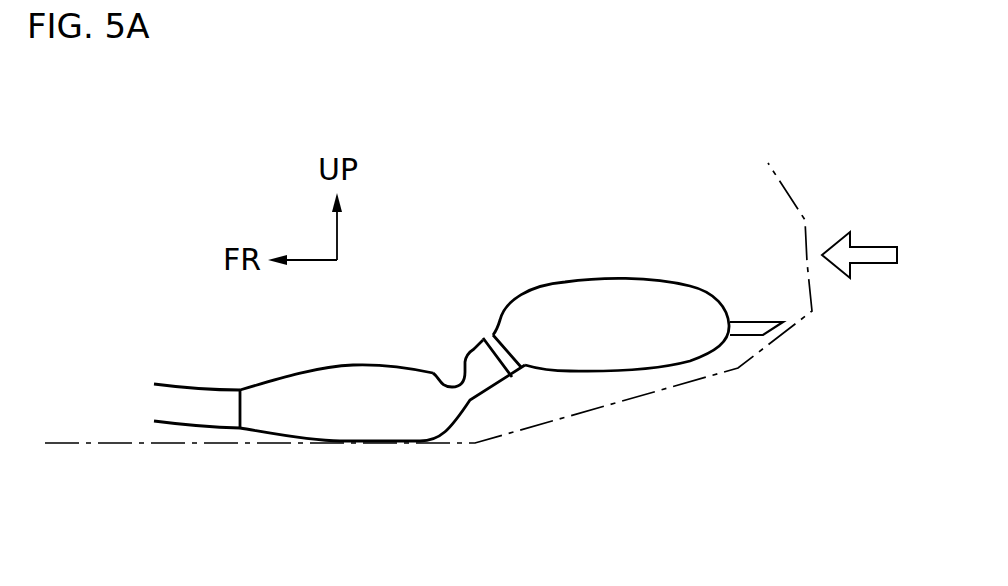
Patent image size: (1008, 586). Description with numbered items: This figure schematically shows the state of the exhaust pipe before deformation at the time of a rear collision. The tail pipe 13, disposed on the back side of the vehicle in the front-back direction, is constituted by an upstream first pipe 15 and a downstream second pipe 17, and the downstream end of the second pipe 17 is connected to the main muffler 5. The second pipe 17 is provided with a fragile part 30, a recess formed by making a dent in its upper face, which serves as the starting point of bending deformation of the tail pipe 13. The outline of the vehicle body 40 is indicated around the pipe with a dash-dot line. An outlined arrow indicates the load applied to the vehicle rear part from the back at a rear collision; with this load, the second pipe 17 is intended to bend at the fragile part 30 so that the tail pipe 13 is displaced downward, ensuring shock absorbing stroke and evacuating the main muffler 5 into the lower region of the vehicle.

The main muffler 5 is at (605, 303).
The tail pipe 13 is at (339, 458).
The first pipe 15 is at (215, 422).
The second pipe 17 is at (382, 431).
The fragile part 30 is at (460, 383).
The vehicle body 40 is at (730, 370).